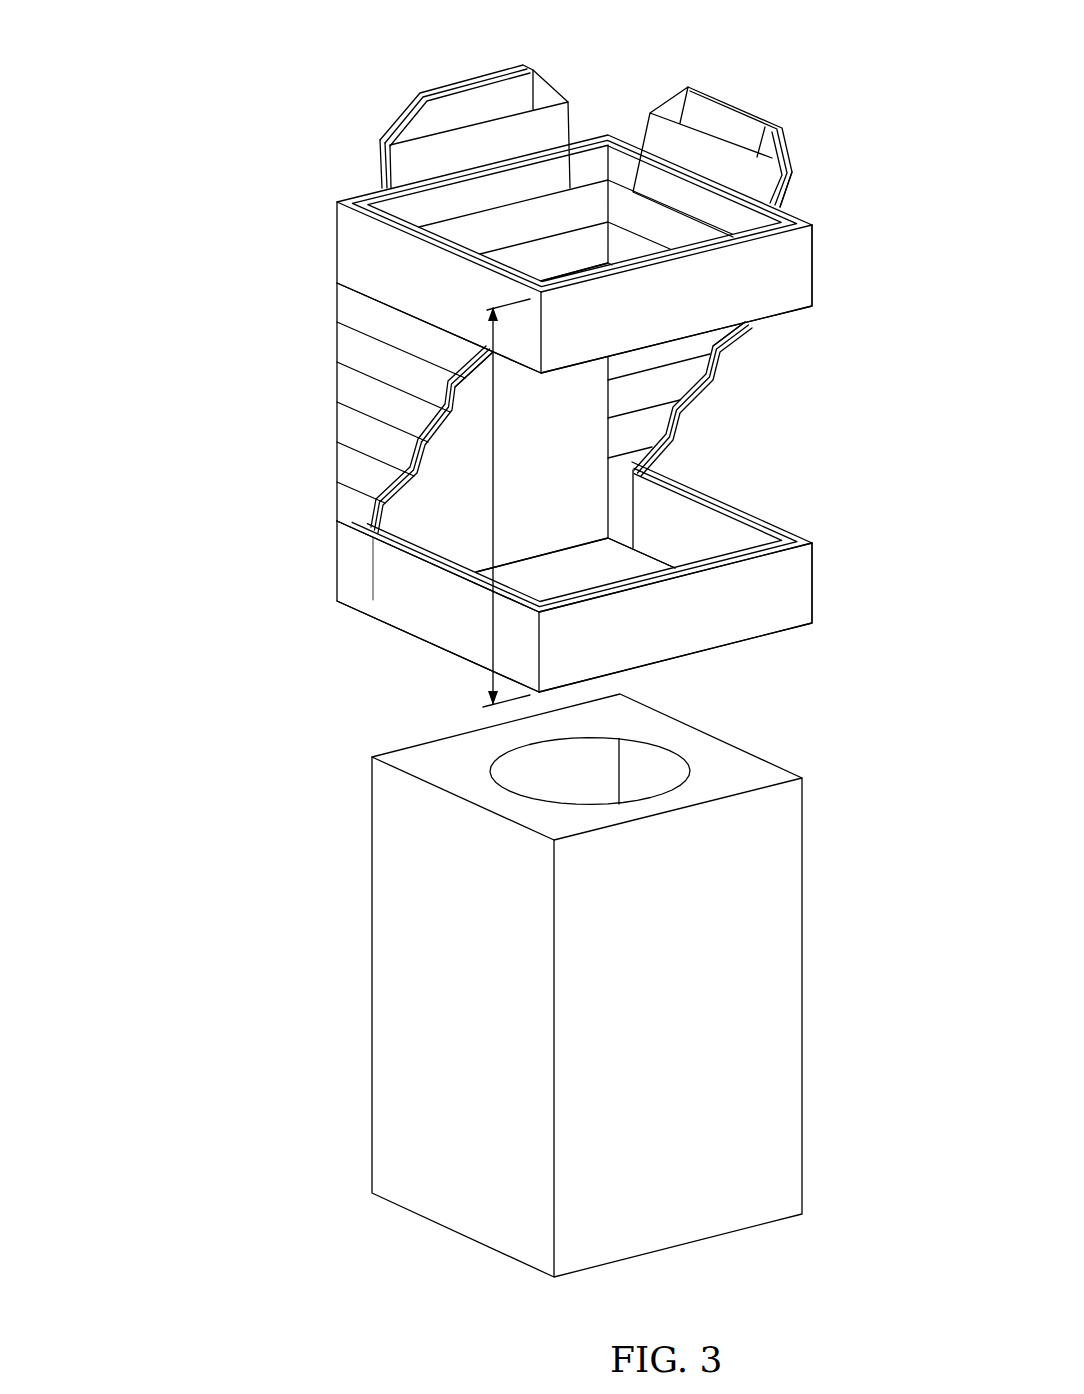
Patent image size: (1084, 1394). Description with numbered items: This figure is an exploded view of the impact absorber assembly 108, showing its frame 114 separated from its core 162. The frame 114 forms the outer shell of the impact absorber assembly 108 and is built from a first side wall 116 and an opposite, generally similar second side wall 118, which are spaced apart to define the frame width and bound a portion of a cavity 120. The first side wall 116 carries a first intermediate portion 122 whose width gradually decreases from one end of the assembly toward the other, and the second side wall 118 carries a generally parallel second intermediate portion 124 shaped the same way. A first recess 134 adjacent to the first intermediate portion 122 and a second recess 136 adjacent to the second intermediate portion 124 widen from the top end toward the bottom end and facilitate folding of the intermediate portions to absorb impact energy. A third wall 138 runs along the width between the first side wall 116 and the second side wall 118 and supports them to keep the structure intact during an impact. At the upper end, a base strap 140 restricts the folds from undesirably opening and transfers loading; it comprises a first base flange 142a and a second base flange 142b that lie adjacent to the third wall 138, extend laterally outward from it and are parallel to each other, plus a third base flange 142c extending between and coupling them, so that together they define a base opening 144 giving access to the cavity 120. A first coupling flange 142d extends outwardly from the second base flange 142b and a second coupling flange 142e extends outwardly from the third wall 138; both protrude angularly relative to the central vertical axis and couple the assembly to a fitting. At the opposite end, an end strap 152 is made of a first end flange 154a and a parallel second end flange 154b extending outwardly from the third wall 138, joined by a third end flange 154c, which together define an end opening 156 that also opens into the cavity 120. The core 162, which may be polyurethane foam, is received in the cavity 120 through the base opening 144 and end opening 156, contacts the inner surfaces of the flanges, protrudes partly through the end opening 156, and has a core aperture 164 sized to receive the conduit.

The impact absorber assembly 108 is at (147, 208).
The frame 114 is at (606, 80).
The first side wall 116 is at (337, 338).
The second side wall 118 is at (727, 365).
The cavity 120 is at (557, 253).
The first intermediate portion 122 is at (415, 417).
The second intermediate portion 124 is at (667, 387).
The first recess 134 is at (437, 499).
The second recess 136 is at (790, 465).
The third wall 138 is at (572, 457).
The base strap 140 is at (780, 289).
The first base flange 142a is at (378, 259).
The second base flange 142b is at (623, 133).
The third base flange 142c is at (797, 247).
The first coupling flange 142d is at (790, 144).
The second coupling flange 142e is at (510, 98).
The base opening 144 is at (477, 235).
The end strap 152 is at (402, 593).
The first end flange 154a is at (428, 617).
The second end flange 154b is at (737, 560).
The third end flange 154c is at (738, 615).
The end opening 156 is at (550, 578).
The core 162 is at (758, 1075).
The core aperture 164 is at (642, 776).